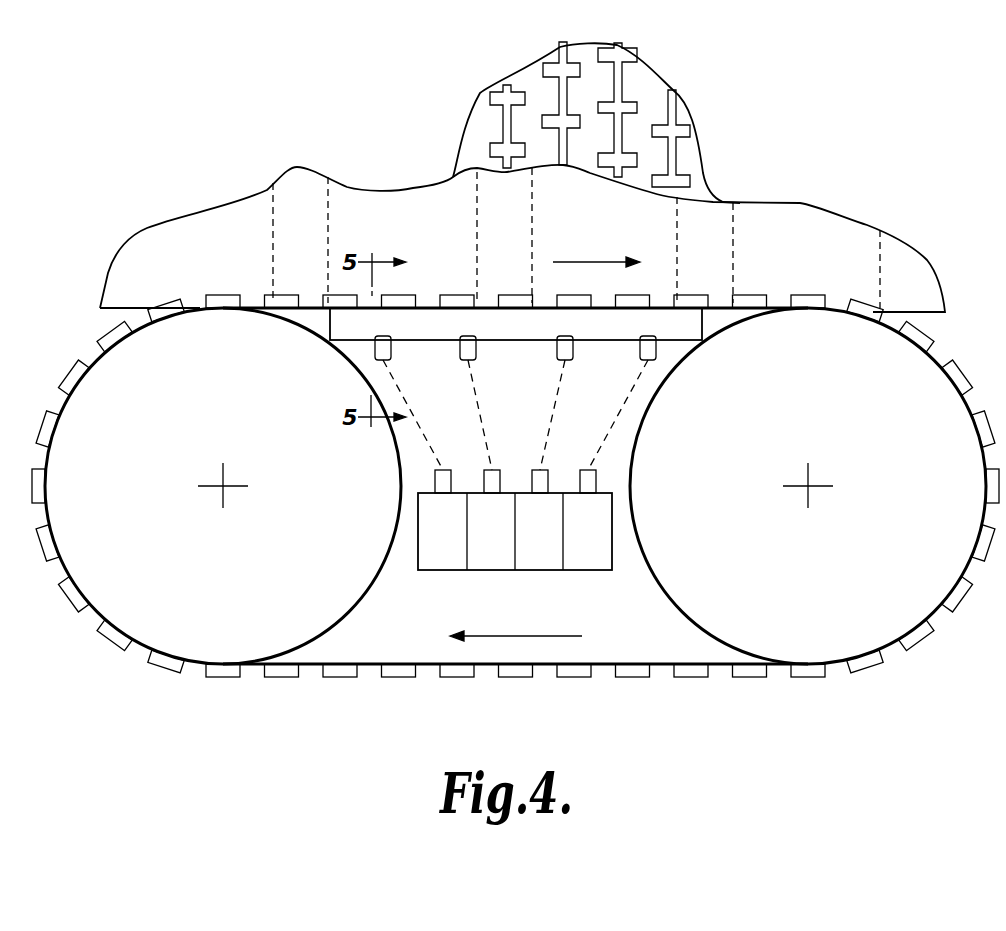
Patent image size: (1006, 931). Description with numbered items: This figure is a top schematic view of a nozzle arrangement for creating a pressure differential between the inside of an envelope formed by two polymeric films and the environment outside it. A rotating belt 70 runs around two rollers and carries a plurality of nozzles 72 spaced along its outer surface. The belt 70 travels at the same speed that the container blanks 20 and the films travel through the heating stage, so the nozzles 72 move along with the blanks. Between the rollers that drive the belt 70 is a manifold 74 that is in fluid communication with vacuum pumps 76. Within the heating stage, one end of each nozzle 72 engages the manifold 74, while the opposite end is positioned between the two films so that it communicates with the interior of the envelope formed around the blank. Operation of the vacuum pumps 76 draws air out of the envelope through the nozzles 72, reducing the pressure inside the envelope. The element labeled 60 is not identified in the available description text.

The container blanks 20 is at (183, 247).
The sensor/antenna assembly 60 is at (401, 146).
The rotating belt 70 is at (603, 664).
The nozzles 72 is at (808, 297).
The manifold 74 is at (330, 320).
The vacuum pumps 76 is at (447, 570).